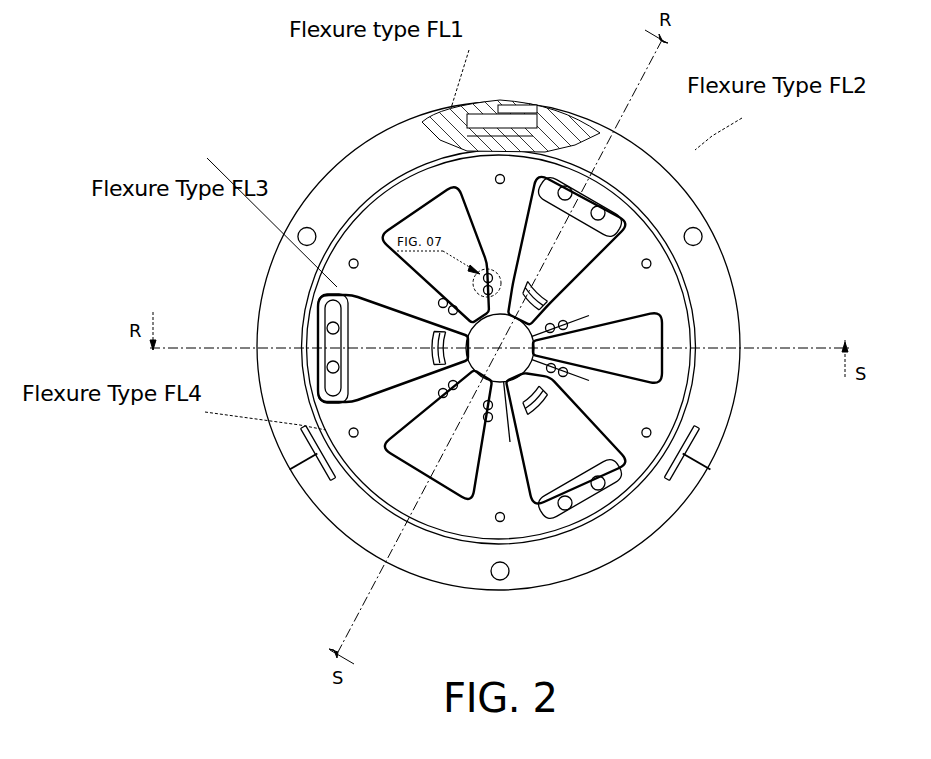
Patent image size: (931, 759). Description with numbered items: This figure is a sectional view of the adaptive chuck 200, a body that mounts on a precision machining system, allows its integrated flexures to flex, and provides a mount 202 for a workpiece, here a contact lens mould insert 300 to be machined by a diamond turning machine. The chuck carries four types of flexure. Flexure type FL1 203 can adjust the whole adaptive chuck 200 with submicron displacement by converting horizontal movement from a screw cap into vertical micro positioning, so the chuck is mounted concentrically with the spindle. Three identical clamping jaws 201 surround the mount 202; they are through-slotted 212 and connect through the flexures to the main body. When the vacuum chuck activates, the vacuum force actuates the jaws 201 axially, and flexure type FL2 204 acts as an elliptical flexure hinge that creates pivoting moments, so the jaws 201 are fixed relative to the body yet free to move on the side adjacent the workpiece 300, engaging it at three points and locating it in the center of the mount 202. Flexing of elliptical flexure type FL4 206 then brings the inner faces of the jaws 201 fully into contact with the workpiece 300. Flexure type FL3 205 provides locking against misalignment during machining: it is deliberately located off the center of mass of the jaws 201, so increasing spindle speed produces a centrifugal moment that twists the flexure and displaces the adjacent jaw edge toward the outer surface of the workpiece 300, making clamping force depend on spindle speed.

The adaptive chuck 200 is at (308, 230).
The clamping jaws 201 is at (494, 373).
The mount 202 is at (450, 227).
The flexure type FL1 203 is at (475, 280).
The flexure type FL2 204 is at (471, 348).
The flexure type FL3 205 is at (480, 382).
The flexure type FL4 206 is at (431, 365).
The through-slot 212 is at (577, 348).
The contact lens mould insert 300 is at (432, 343).